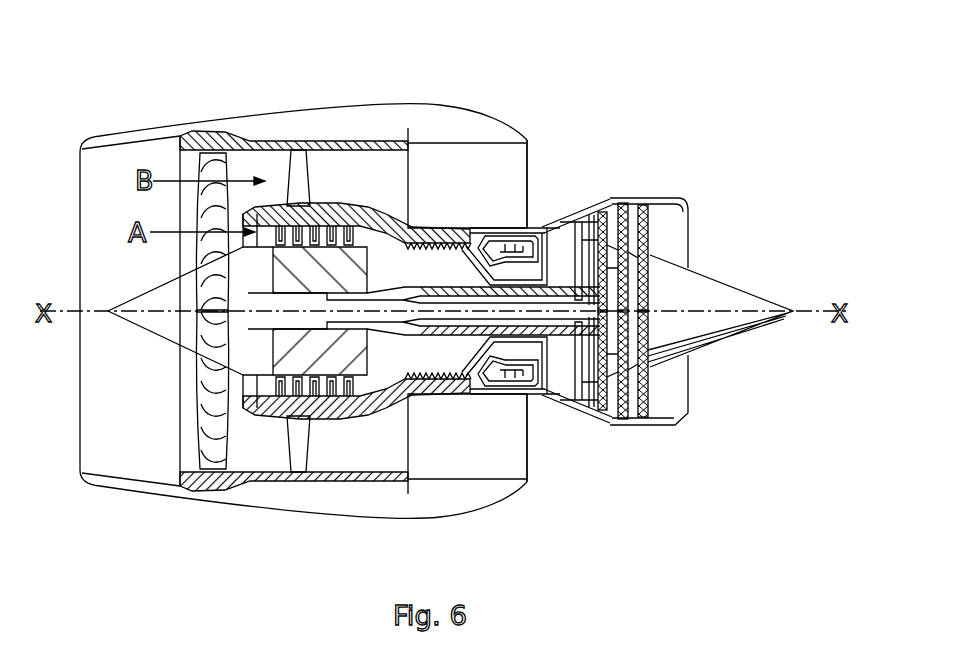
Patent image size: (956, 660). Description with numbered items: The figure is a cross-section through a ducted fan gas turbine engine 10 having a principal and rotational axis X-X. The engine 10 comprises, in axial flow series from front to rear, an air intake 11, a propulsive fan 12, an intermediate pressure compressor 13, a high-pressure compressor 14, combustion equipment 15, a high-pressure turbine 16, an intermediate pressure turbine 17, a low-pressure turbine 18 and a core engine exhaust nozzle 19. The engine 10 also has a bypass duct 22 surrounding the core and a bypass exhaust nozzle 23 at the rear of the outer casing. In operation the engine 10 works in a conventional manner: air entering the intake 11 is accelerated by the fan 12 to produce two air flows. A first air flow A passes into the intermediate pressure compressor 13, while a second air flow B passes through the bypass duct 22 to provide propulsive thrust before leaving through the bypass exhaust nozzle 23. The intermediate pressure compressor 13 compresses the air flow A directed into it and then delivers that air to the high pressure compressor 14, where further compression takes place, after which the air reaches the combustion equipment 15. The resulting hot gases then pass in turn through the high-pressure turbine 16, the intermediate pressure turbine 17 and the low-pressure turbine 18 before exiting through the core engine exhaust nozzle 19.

The ducted fan gas turbine engine 10 is at (150, 95).
The air intake 11 is at (130, 149).
The propulsive fan 12 is at (203, 427).
The intermediate pressure compressor 13 is at (330, 411).
The high-pressure compressor 14 is at (432, 250).
The combustion equipment 15 is at (478, 382).
The high-pressure turbine 16 is at (538, 398).
The intermediate pressure turbine 17 is at (574, 226).
The low-pressure turbine 18 is at (592, 421).
The core engine exhaust nozzle 19 is at (685, 210).
The bypass duct 22 is at (498, 182).
The bypass exhaust nozzle 23 is at (527, 140).